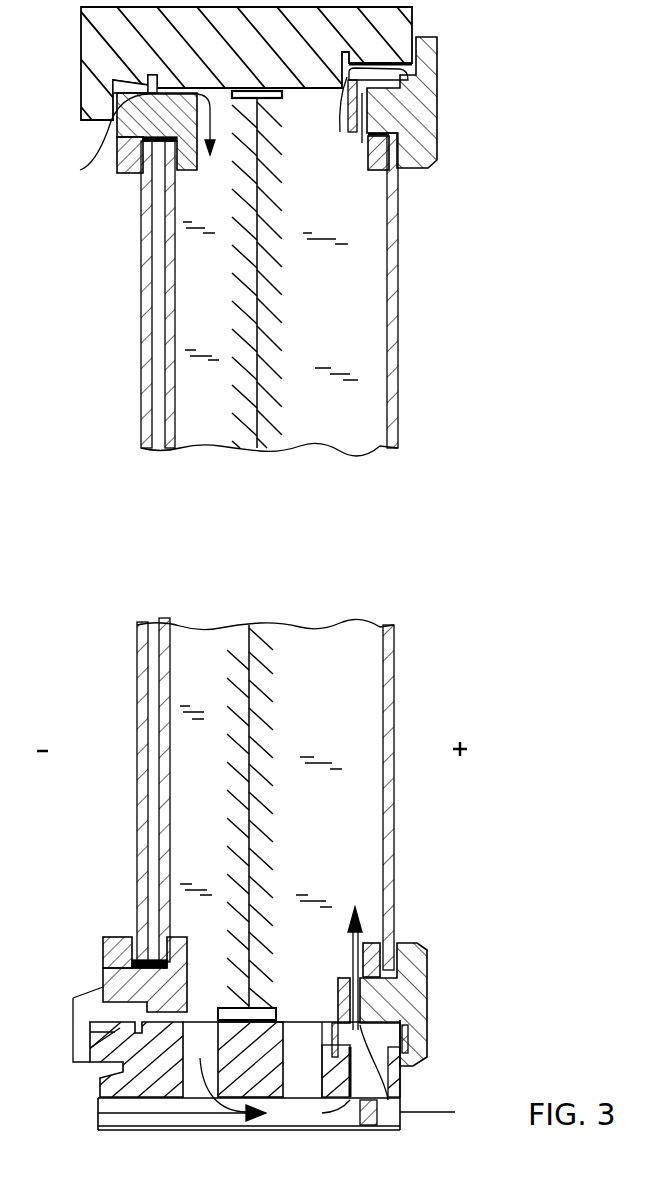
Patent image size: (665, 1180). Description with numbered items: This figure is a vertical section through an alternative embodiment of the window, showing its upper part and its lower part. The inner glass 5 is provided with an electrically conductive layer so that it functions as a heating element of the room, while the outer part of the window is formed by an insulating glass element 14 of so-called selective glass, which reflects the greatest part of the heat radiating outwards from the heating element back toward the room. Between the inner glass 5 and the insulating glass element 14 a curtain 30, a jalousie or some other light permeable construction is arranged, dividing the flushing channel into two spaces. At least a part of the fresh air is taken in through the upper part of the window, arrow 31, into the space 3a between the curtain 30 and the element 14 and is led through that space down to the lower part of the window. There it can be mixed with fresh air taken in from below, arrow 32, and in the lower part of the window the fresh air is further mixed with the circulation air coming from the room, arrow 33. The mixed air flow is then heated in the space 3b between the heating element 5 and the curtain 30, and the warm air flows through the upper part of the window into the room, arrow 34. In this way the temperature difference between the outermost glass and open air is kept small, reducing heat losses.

The arrow 31 is at (146, 143).
The arrow 34 is at (416, 52).
The insulating glass element 14 is at (140, 328).
The curtain 30 is at (268, 348).
The inner glass 5 is at (398, 363).
The space 3a is at (197, 378).
The space 3b is at (372, 740).
The arrow 32 is at (87, 1113).
The arrow 33 is at (470, 1092).